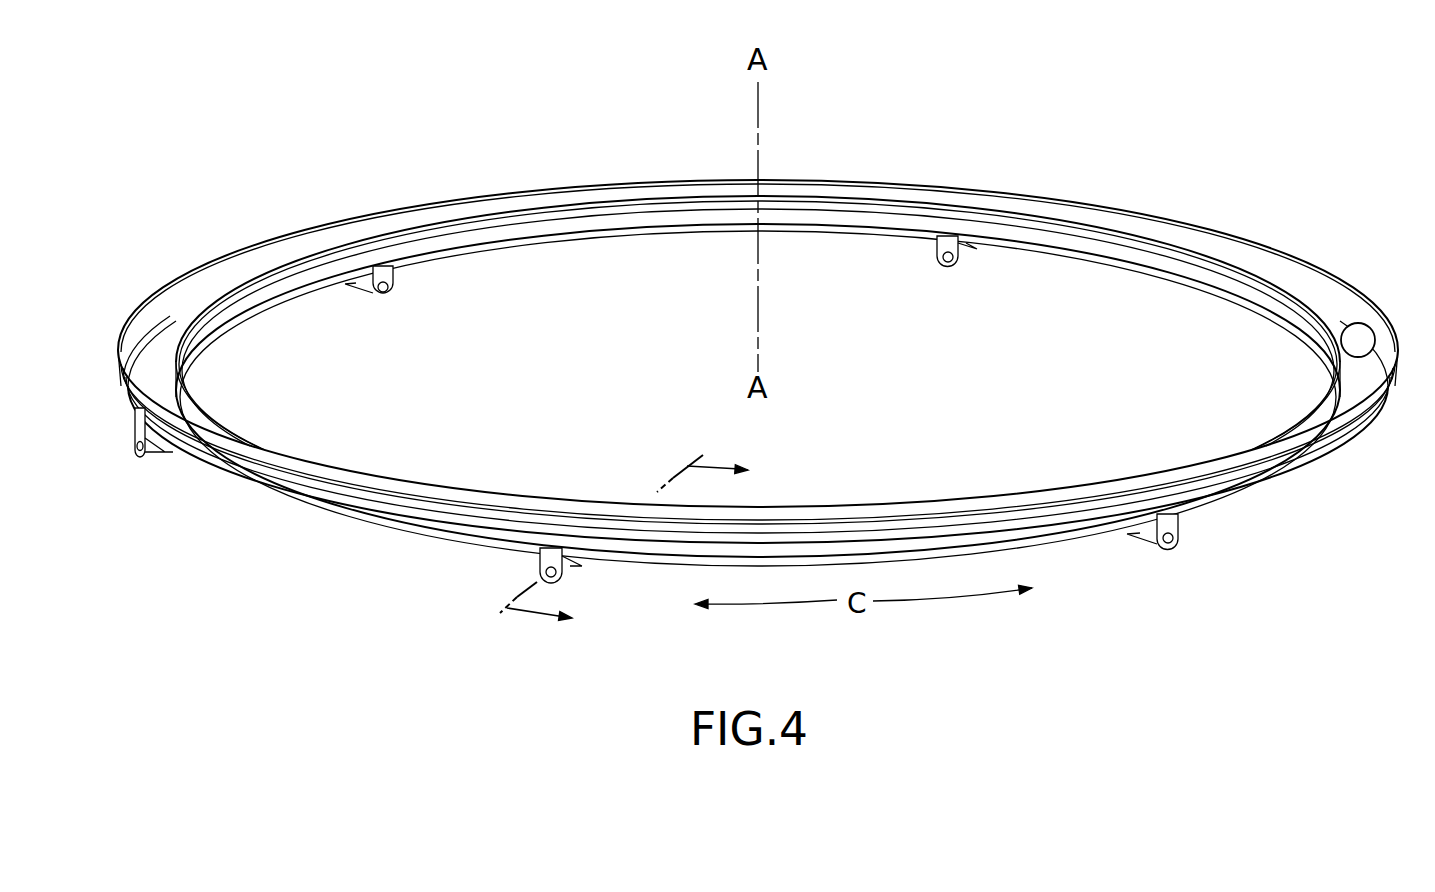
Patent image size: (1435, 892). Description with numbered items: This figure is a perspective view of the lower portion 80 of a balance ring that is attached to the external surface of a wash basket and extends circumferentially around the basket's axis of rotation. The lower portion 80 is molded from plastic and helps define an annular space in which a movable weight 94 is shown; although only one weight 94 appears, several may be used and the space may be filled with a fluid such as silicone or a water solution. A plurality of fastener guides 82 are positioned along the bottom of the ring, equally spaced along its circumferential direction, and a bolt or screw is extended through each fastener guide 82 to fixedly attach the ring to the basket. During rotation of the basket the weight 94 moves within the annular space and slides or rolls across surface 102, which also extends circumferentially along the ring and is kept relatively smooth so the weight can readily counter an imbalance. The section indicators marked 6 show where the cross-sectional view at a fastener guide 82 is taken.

The lower portion 80 is at (957, 137).
The fastener guide 82 is at (403, 302).
The movable weight 94 is at (1358, 333).
The surface 102 is at (161, 350).
The section view indicator 6 is at (607, 528).